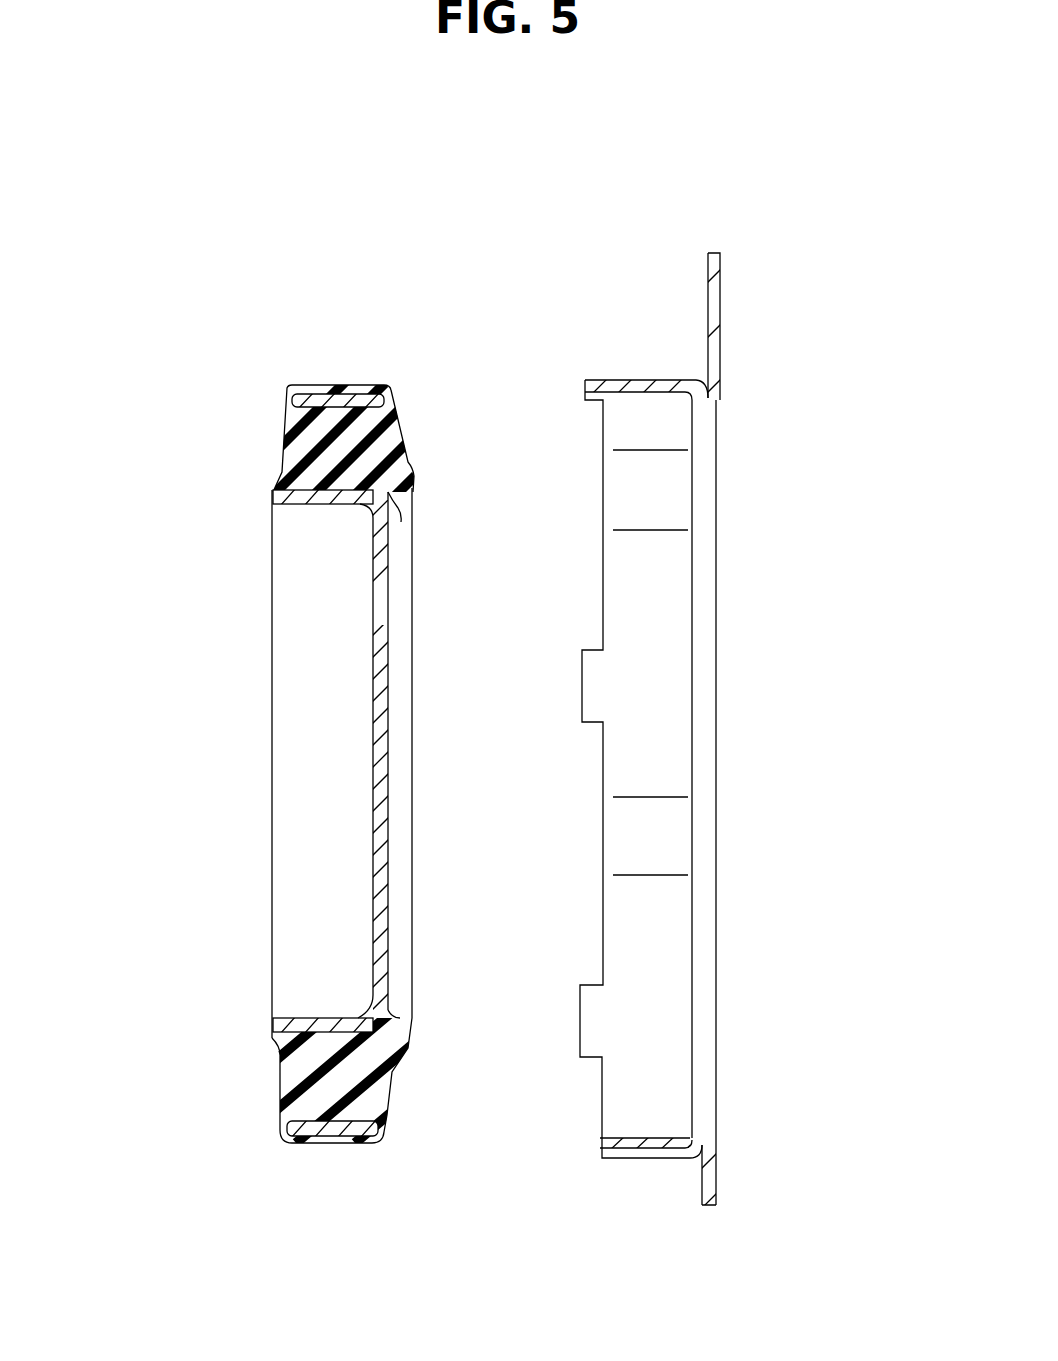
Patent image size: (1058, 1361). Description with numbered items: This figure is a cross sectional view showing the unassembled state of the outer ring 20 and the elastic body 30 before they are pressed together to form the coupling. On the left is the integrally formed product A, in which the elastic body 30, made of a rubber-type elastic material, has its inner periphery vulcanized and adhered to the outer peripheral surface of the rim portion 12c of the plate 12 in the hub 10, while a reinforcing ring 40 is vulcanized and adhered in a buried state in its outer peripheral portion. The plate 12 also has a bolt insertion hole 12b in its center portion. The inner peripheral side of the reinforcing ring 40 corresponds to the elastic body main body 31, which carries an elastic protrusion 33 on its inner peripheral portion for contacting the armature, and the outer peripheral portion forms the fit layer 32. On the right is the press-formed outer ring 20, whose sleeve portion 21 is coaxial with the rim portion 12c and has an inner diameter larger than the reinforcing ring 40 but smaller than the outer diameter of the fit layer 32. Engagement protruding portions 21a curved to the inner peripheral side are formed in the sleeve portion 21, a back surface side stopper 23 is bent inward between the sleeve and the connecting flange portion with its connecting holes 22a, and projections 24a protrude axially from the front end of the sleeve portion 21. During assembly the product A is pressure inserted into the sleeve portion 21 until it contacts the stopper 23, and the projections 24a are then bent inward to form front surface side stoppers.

The hub 10 is at (304, 782).
The plate 12 is at (328, 771).
The bolt insertion hole 12b is at (388, 762).
The rim portion 12c is at (325, 502).
The outer ring 20 is at (676, 752).
The sleeve portion 21 is at (652, 380).
The engagement protruding portion 21a is at (668, 495).
The connecting hole 22a is at (714, 300).
The back surface side stopper 23 is at (710, 410).
The projection 24a is at (588, 385).
The elastic body 30 is at (309, 782).
The elastic body main body 31 is at (372, 437).
The fit layer 32 is at (350, 384).
The elastic protrusion 33 is at (402, 490).
The reinforcing ring 40 is at (333, 1143).
The integrally formed product A is at (260, 400).